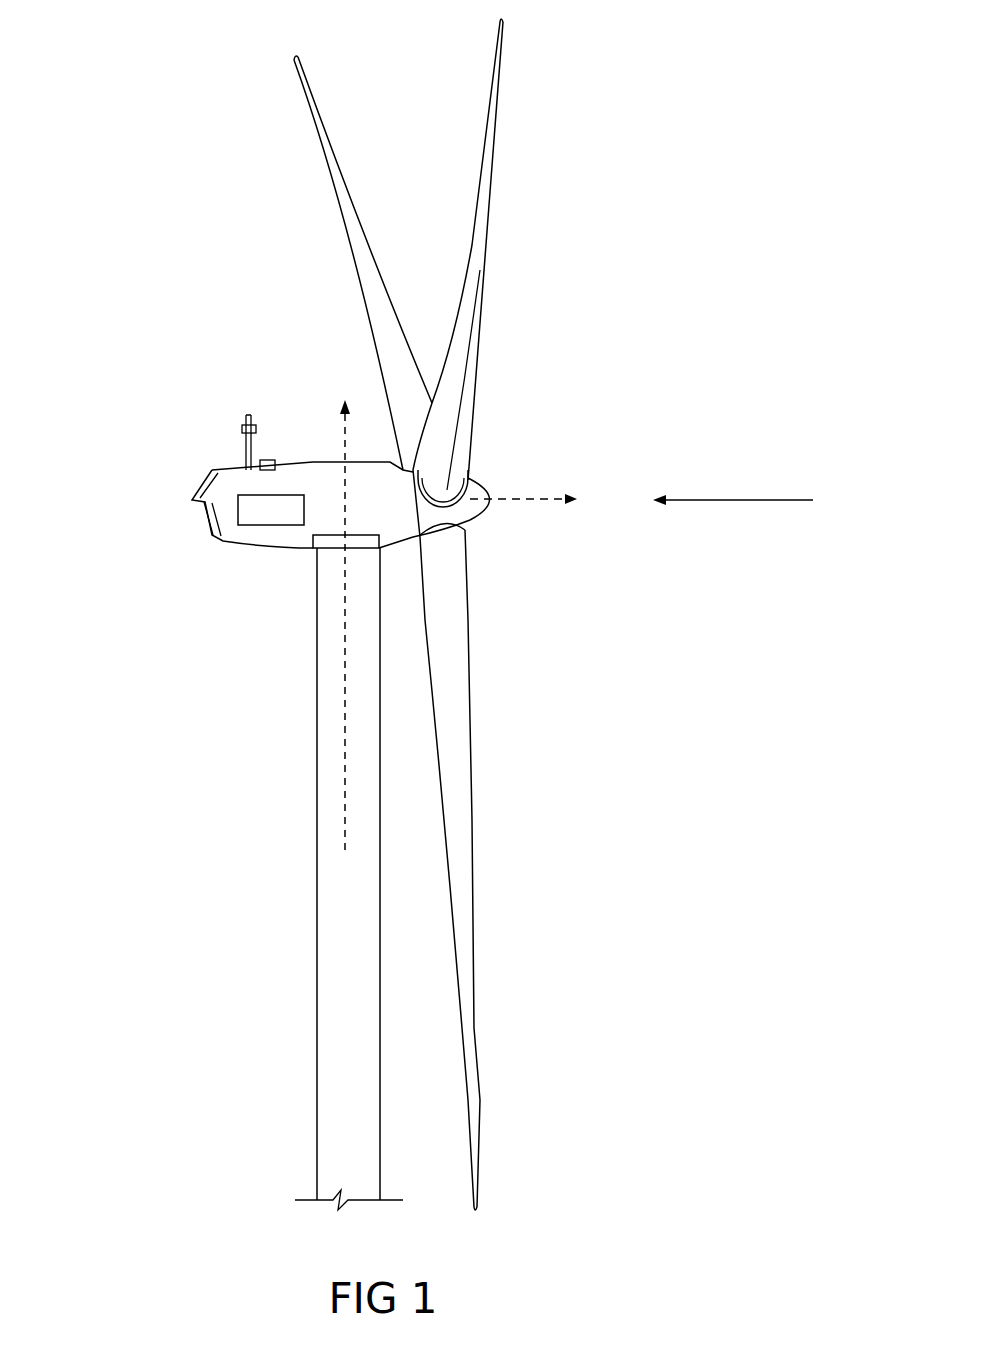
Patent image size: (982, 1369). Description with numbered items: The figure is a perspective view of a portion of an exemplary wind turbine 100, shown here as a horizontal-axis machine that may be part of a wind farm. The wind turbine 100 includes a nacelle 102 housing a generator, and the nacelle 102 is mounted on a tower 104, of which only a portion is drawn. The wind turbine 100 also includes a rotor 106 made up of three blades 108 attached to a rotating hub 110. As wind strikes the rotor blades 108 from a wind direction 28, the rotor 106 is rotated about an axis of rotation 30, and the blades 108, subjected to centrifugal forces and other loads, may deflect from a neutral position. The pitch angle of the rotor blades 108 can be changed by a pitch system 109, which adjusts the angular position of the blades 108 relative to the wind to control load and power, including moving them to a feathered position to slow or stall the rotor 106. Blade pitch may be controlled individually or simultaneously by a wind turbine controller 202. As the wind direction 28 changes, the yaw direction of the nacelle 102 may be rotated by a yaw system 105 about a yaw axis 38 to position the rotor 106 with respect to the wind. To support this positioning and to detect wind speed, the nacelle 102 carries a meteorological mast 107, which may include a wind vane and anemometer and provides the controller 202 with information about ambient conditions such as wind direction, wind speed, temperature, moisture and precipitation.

The wind turbine 100 is at (178, 102).
The nacelle 102 is at (244, 550).
The tower 104 is at (317, 823).
The yaw system 105 is at (337, 538).
The rotor 106 is at (550, 237).
The meteorological mast 107 is at (248, 394).
The rotor blade 108 is at (332, 145).
The pitch system 109 is at (445, 530).
The rotating hub 110 is at (485, 513).
The wind turbine controller 202 is at (250, 510).
The wind direction 28 is at (768, 500).
The axis of rotation 30 is at (525, 497).
The yaw axis 38 is at (345, 713).